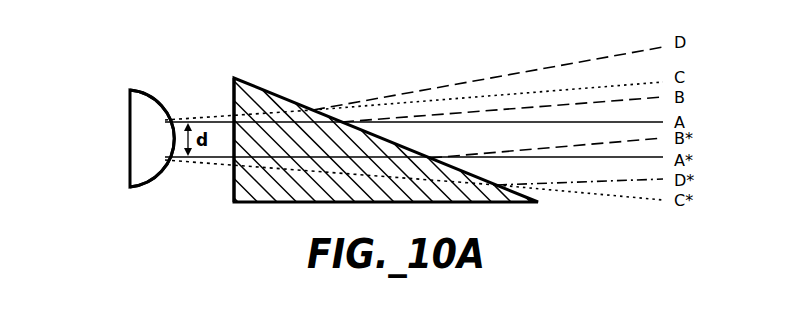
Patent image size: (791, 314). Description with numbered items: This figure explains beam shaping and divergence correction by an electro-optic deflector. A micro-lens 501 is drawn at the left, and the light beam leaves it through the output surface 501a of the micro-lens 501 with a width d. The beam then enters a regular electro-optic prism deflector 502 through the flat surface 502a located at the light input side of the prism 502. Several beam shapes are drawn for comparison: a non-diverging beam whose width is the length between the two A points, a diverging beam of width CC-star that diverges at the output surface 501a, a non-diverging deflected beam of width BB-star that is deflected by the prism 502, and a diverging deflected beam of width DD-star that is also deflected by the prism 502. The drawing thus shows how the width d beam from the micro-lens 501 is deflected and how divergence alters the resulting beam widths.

The micro-lens 501 is at (137, 113).
The output surface of the micro-lens 501a is at (149, 181).
The electro-optic prism deflector 502 is at (235, 97).
The flat surface 502a is at (234, 183).